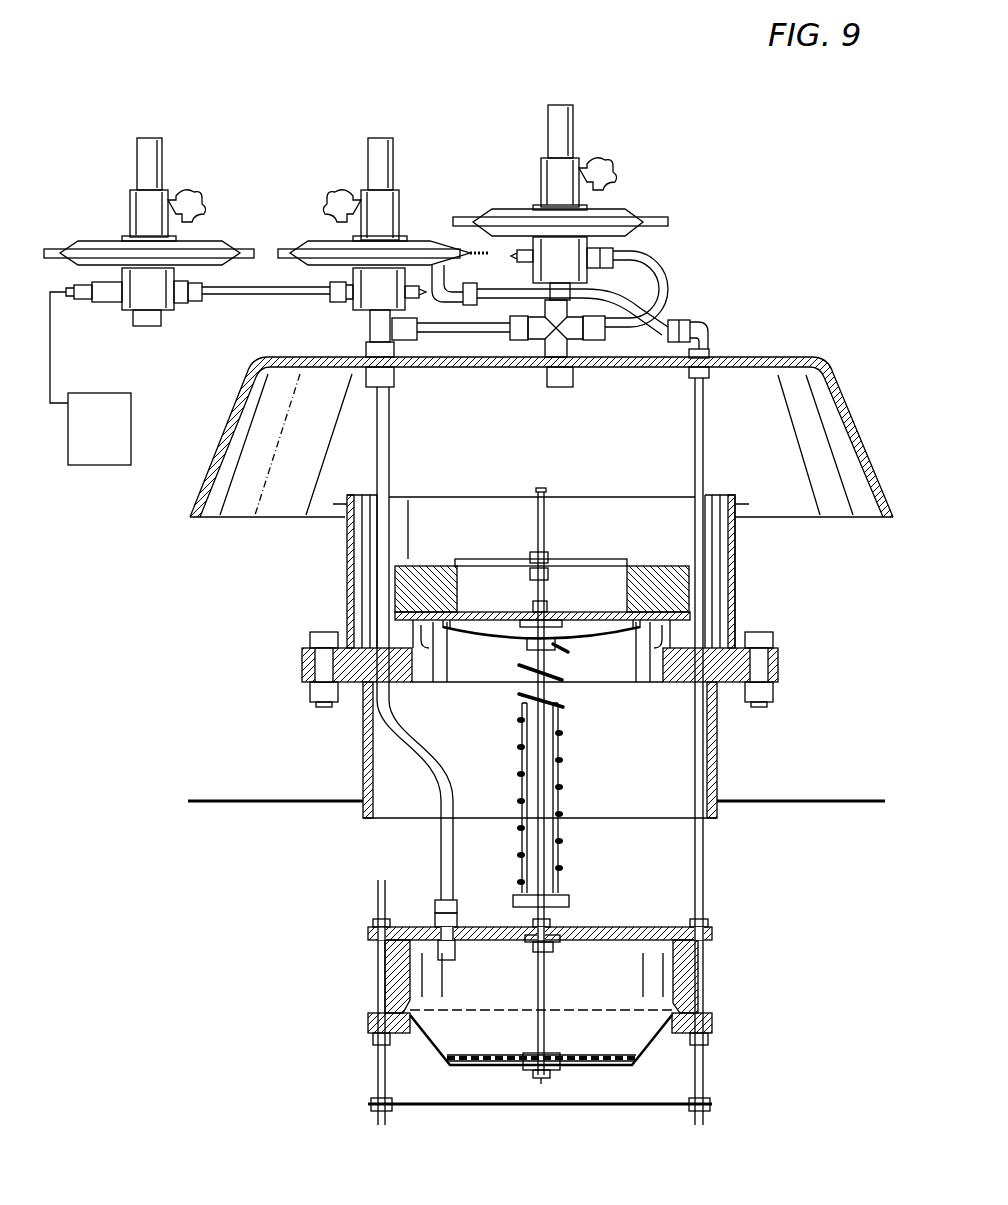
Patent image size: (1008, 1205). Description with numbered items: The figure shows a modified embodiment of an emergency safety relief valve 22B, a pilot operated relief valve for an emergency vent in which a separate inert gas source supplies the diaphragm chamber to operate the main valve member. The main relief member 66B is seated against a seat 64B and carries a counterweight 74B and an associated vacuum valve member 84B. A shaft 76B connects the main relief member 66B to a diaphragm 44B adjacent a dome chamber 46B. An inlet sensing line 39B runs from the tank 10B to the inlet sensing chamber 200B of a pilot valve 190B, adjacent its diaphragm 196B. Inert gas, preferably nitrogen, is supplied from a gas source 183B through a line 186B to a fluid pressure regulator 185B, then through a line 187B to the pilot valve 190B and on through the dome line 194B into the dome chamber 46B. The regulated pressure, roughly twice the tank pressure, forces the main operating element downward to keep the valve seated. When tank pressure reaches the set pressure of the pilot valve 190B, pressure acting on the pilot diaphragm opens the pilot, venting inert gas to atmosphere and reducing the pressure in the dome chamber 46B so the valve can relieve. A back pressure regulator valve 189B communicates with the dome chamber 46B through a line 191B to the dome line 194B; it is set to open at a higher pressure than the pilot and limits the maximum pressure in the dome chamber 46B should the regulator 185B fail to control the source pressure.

The tank 10B is at (766, 796).
The emergency safety relief valve 22B is at (737, 340).
The inlet sensing line 39B is at (613, 293).
The diaphragm 44B is at (432, 1042).
The dome chamber 46B is at (503, 992).
The seat 64B is at (413, 612).
The main relief member 66B is at (457, 613).
The counterweight 74B is at (655, 572).
The shaft 76B is at (548, 976).
The vacuum valve member 84B is at (596, 633).
The gas source 183B is at (118, 441).
The fluid pressure regulator 185B is at (212, 223).
The line 186B is at (52, 352).
The line 187B is at (257, 296).
The back pressure regulator valve 189B is at (636, 193).
The pilot valve 190B is at (407, 208).
The line 191B is at (436, 331).
The dome line 194B is at (390, 445).
The diaphragm 196B is at (312, 252).
The inlet sensing chamber 200B is at (428, 242).